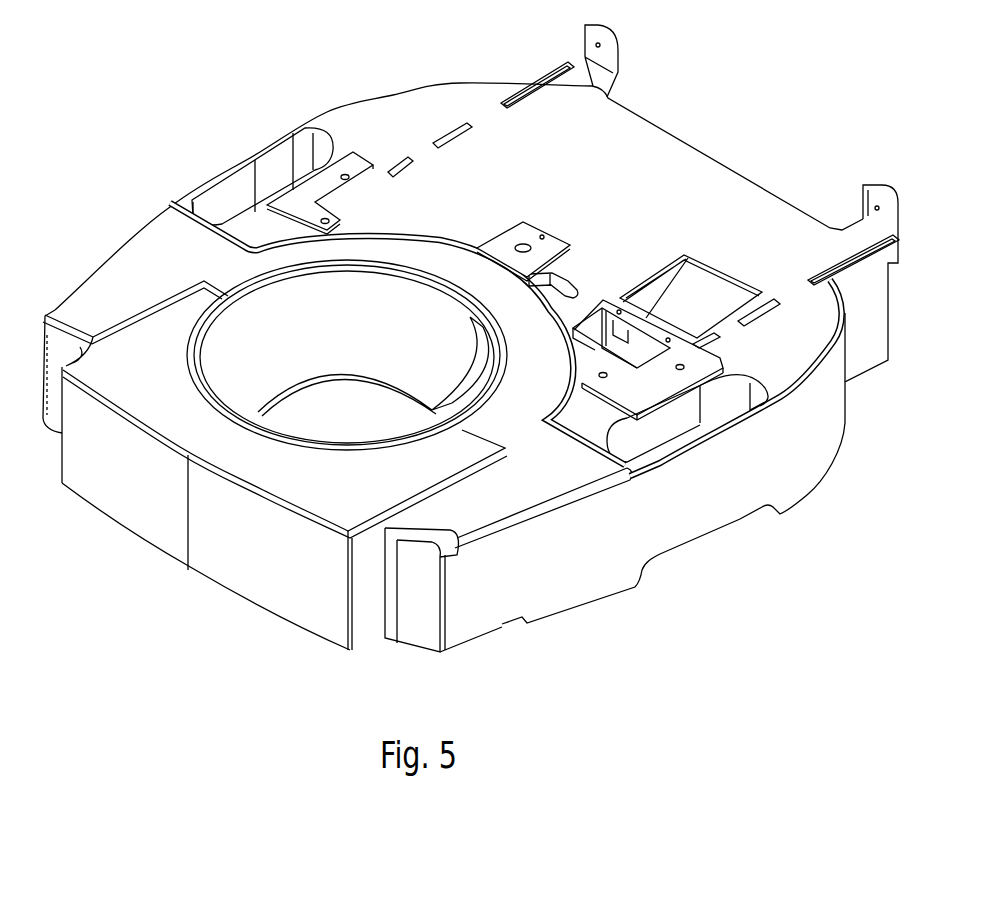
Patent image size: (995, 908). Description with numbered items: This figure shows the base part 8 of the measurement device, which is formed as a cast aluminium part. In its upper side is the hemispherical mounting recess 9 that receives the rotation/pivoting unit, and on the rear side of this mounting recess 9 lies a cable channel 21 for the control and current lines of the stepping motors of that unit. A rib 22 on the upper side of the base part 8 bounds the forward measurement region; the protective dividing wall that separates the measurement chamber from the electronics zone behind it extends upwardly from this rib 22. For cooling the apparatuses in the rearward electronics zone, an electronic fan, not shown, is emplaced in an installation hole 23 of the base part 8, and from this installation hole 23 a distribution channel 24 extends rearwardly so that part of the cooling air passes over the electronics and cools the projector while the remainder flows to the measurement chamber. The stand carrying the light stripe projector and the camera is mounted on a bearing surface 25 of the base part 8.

The base part 8 is at (602, 634).
The hemispherical mounting recess 9 is at (210, 339).
The cable channel 21 is at (567, 288).
The rib 22 is at (393, 234).
The installation hole 23 is at (590, 330).
The distribution channel 24 is at (713, 283).
The bearing surface 25 is at (530, 232).